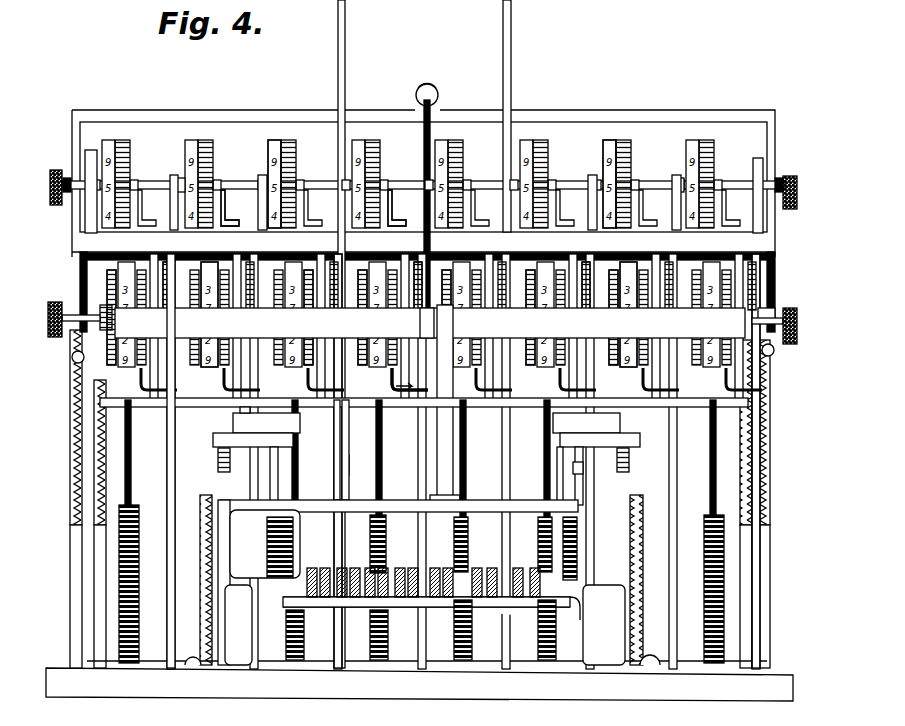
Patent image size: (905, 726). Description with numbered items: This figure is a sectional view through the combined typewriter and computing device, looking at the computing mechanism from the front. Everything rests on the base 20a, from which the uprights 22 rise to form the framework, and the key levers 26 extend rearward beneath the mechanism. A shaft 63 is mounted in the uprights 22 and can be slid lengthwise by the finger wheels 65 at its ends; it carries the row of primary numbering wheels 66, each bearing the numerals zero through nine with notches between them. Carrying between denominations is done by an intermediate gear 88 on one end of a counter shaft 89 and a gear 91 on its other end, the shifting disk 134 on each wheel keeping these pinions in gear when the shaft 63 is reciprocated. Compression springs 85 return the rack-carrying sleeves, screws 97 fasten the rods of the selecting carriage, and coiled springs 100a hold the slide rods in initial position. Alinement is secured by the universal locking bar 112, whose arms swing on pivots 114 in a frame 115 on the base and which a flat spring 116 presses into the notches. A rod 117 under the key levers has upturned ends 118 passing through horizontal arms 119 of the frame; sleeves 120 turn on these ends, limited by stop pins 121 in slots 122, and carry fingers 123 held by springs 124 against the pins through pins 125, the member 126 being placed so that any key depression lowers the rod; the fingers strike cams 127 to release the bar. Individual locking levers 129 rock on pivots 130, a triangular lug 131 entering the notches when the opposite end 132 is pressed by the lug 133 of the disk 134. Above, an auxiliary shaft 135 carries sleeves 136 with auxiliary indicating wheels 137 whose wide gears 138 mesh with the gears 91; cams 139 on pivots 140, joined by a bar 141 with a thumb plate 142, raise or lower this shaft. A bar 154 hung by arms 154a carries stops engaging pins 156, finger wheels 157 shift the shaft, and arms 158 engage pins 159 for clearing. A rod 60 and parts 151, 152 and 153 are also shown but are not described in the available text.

The base 20a is at (148, 688).
The uprights 22 is at (172, 176).
The key levers 26 is at (336, 568).
The rod 60 is at (503, 17).
The shaft 63 is at (100, 308).
The finger wheels 65 is at (48, 321).
The numbering or indicating wheels 66 is at (616, 268).
The compression springs 85 is at (138, 608).
The intermediate gear 88 is at (584, 262).
The counter shaft 89 is at (160, 258).
The gear 91 is at (212, 262).
The screws 97 is at (72, 357).
The coiled springs 100a is at (76, 480).
The universal locking bar 112 is at (366, 323).
The pivots 114 is at (214, 640).
The frame 115 is at (208, 545).
The flat spring 116 is at (437, 441).
The rod 117 is at (412, 607).
The vertical ends of rod 118 is at (268, 541).
The horizontal arms 119 is at (248, 586).
The sleeves 120 is at (342, 450).
The stop pins 121 is at (343, 466).
The slots 122 is at (270, 468).
The fingers 123 is at (213, 440).
The springs 124 is at (342, 428).
The pins 125 is at (233, 421).
The rod support 126 is at (267, 558).
The cams 127 is at (218, 459).
The individual locking levers 129 is at (170, 392).
The pivots 130 is at (172, 384).
The triangular lug 131 is at (380, 386).
The lever end 132 is at (400, 392).
The lug 133 is at (254, 262).
The shifting disk 134 is at (430, 323).
The auxiliary shaft 135 is at (334, 185).
The sleeves 136 is at (181, 176).
The auxiliary numbering or indicating wheels 137 is at (272, 168).
The gears 138 is at (288, 140).
The cams 139 is at (70, 205).
The pivots 140 is at (88, 150).
The bar 141 is at (640, 122).
The thumb plate 142 is at (438, 92).
The lever 151 is at (392, 224).
The opening 152 is at (416, 100).
The rod 153 is at (424, 151).
The bar 154 is at (82, 252).
The arms 154a is at (112, 236).
The pins 156 is at (360, 262).
The finger wheels 157 is at (54, 170).
The arms 158 is at (232, 222).
The pins 159 is at (320, 262).